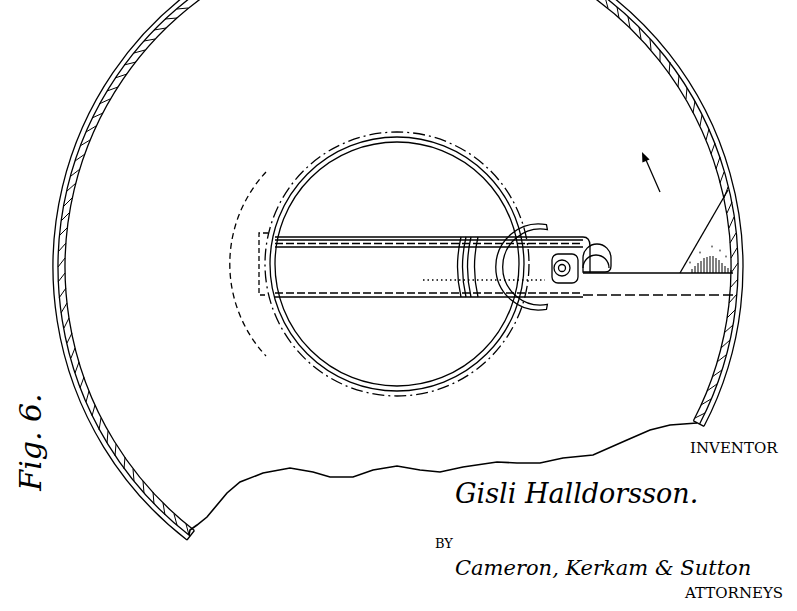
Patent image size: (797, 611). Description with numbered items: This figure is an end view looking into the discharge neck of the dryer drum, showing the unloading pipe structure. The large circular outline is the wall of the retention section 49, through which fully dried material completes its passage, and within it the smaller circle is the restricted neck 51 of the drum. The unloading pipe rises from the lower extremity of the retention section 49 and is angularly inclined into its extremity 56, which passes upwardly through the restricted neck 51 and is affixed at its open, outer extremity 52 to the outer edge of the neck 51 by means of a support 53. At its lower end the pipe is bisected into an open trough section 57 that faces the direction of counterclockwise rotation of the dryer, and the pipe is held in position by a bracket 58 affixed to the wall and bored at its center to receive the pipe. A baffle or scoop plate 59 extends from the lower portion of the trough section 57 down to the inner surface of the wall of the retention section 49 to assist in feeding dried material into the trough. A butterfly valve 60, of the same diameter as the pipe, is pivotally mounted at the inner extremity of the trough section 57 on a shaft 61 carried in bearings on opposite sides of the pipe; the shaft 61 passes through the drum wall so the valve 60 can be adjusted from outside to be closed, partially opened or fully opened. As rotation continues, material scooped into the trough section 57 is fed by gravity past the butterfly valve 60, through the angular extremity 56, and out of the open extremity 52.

The retention section 49 is at (728, 167).
The restricted neck 51 is at (453, 143).
The open outer extremity 52 is at (258, 263).
The support 53 is at (268, 220).
The extremity 56 is at (383, 237).
The trough section 57 is at (648, 273).
The bracket 58 is at (540, 238).
The baffle or scoop plate 59 is at (712, 227).
The butterfly valve 60 is at (600, 257).
The shaft 61 is at (559, 263).